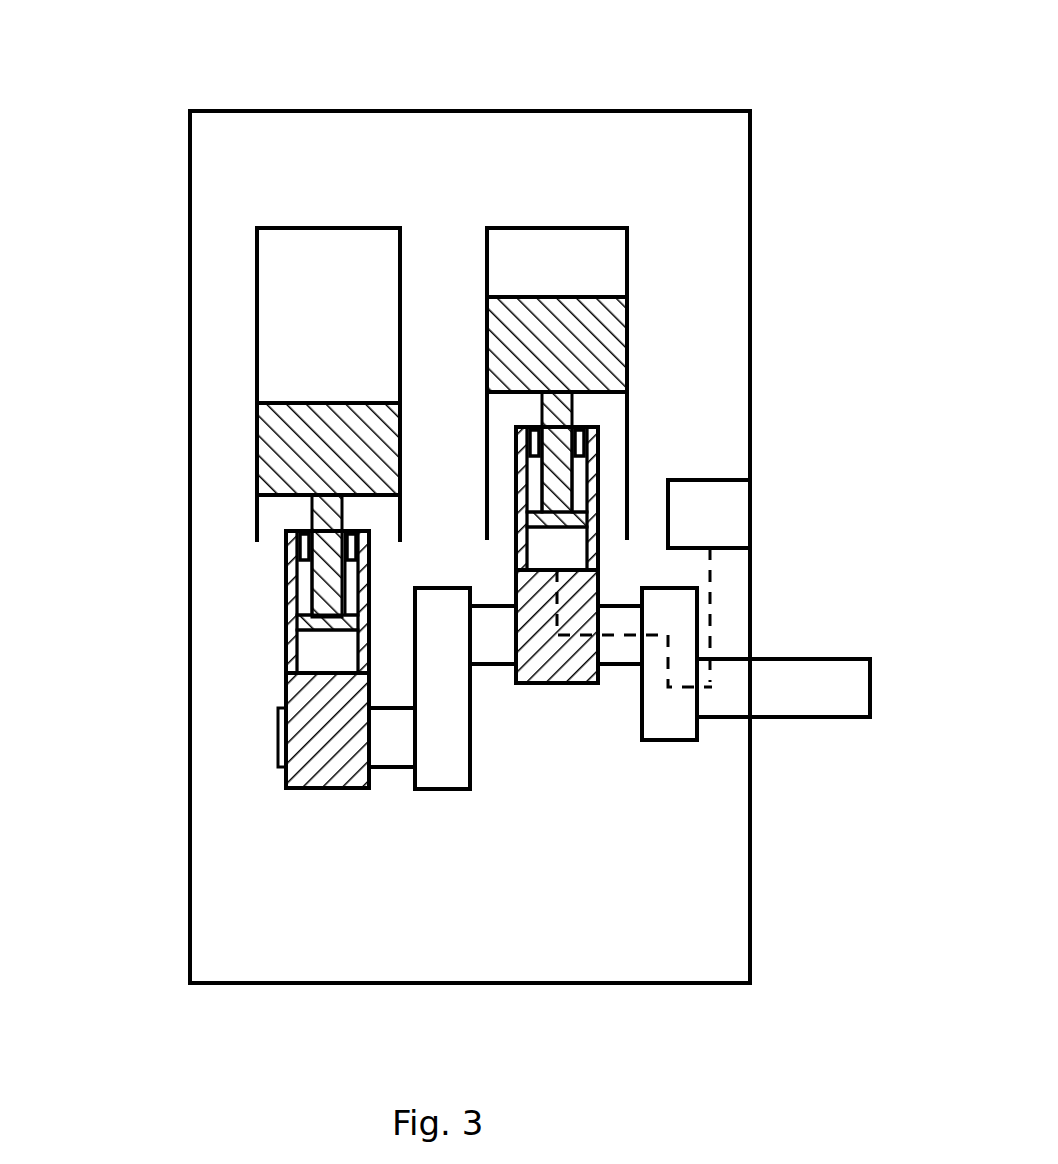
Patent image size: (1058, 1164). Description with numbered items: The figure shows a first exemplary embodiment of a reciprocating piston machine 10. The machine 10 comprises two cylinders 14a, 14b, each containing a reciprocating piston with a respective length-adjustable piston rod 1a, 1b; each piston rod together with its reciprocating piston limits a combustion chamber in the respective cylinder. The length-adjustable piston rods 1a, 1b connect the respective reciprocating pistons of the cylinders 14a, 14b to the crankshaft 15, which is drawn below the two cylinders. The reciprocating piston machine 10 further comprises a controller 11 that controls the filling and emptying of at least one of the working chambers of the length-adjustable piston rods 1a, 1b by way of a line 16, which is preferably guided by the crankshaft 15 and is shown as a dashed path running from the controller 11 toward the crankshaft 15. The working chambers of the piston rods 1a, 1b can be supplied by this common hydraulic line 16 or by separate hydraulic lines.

The reciprocating piston machine 10 is at (765, 230).
The cylinder 14a is at (257, 308).
The cylinder 14b is at (632, 252).
The length-adjustable piston rod 1a is at (268, 630).
The length-adjustable piston rod 1b is at (612, 457).
The controller 11 is at (729, 534).
The crankshaft 15 is at (470, 732).
The line 16 is at (710, 608).